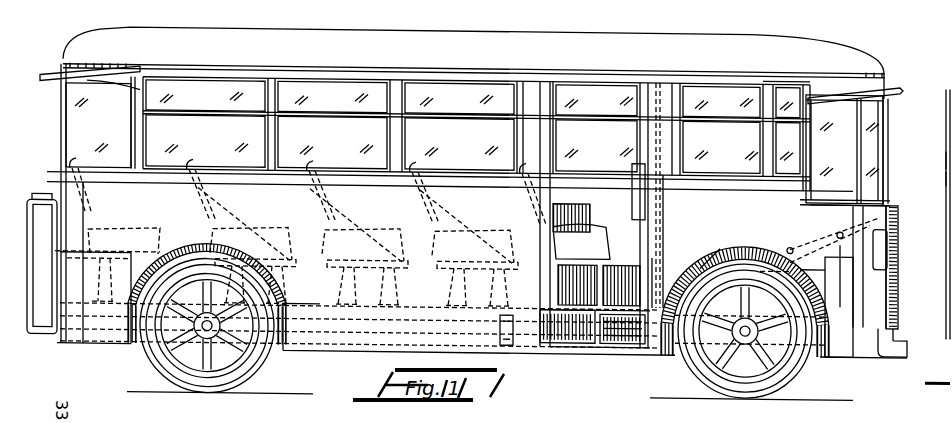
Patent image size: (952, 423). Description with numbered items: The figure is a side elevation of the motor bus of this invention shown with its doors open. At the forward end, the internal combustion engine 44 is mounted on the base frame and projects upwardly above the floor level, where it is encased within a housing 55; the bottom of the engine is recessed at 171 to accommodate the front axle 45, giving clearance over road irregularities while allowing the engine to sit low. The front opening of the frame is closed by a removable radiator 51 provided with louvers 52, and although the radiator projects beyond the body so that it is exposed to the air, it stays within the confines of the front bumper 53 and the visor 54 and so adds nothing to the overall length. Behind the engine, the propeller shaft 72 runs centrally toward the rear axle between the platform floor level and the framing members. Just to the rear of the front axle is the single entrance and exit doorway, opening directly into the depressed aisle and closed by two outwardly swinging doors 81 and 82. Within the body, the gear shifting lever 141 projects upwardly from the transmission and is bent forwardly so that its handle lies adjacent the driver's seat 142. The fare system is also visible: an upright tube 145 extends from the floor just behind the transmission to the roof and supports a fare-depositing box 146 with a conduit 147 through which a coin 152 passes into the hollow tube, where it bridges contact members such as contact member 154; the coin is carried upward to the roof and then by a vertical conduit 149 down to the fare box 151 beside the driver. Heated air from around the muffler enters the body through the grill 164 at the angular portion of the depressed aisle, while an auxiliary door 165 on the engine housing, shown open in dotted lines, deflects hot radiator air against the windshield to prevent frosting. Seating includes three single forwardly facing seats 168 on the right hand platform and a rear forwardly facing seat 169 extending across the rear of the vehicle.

The internal combustion engine 44 is at (832, 317).
The front axle 45 is at (717, 353).
The radiator 51 is at (892, 216).
The louvers 52 is at (897, 236).
The front bumper 53 is at (907, 322).
The visor 54 is at (903, 75).
The housing 55 is at (810, 235).
The propeller shaft 72 is at (363, 322).
The outwardly swinging door 81 is at (656, 70).
The outwardly swinging door 82 is at (547, 70).
The gear shifting lever 141 is at (708, 262).
The driver's seat 142 is at (721, 147).
The upright tube 145 is at (657, 268).
The fare-depositing box 146 is at (636, 182).
The conduit 147 is at (638, 220).
The vertical conduit 149 is at (790, 66).
The fare box 151 is at (845, 150).
The coin 152 is at (950, 149).
The contact member 154 is at (950, 166).
The grill 164 is at (617, 332).
The auxiliary door 165 is at (893, 148).
The single forwardly facing seat 168 is at (256, 238).
The rear forwardly facing seat 169 is at (122, 236).
The recess 171 is at (757, 364).